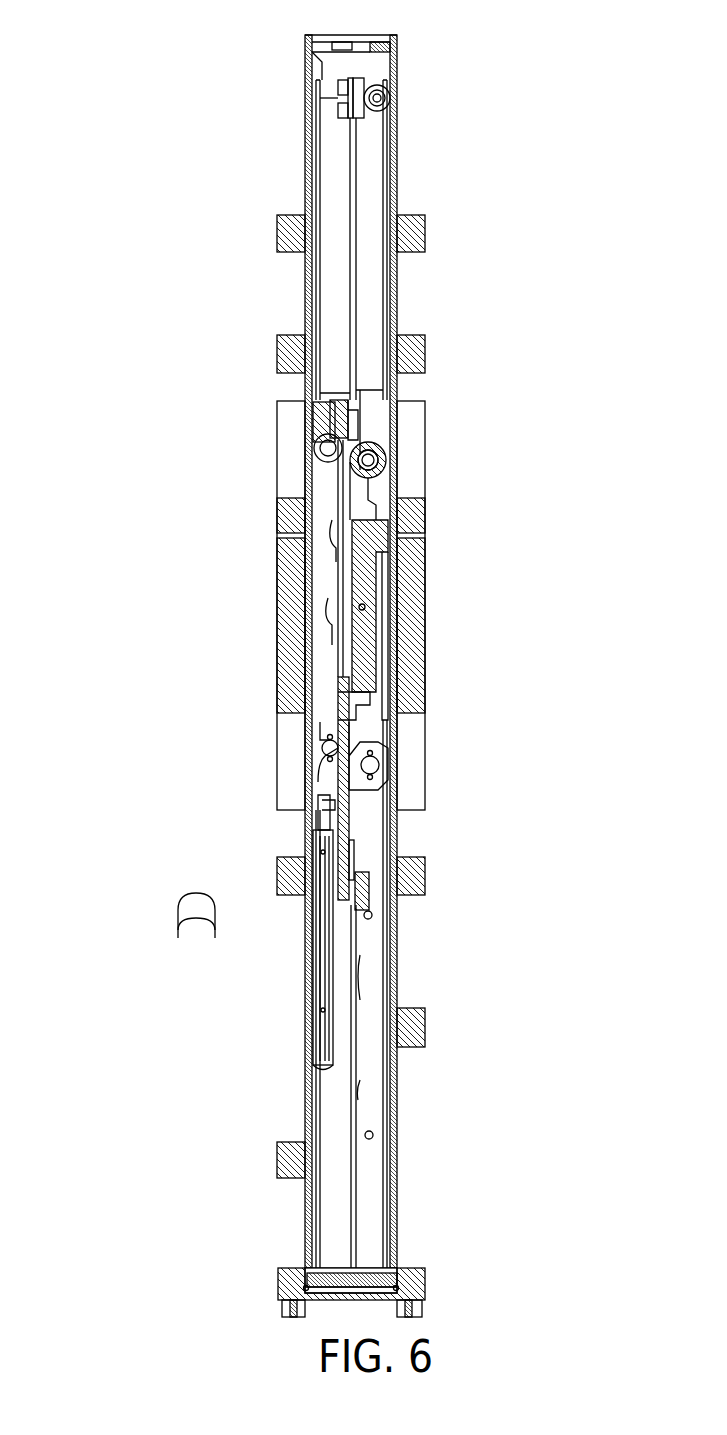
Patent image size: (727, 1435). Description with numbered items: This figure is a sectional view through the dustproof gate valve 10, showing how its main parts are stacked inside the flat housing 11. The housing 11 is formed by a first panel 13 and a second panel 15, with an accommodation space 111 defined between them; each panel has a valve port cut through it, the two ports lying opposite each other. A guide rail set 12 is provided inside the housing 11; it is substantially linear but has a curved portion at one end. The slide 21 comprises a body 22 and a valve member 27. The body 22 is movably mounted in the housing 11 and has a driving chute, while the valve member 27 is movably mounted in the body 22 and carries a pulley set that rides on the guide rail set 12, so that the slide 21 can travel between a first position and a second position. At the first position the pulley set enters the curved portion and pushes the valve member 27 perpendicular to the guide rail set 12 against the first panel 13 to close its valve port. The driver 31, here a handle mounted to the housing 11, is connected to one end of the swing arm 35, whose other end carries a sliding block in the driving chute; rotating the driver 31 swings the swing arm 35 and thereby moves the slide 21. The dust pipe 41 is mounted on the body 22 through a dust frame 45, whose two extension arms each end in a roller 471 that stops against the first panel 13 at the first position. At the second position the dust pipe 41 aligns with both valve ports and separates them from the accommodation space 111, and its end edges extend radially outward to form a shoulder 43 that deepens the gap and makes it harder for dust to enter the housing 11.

The dustproof gate valve 10 is at (575, 135).
The housing 11 is at (405, 55).
The accommodation space 111 is at (353, 1062).
The guide rail set 12 is at (357, 827).
The first panel 13 is at (398, 195).
The second panel 15 is at (305, 290).
The slide 21 is at (308, 638).
The body 22 is at (313, 583).
The valve member 27 is at (380, 594).
The driver 31 is at (175, 1030).
The swing arm 35 is at (332, 955).
The dust pipe 41 is at (372, 184).
The shoulder 43 is at (318, 100).
The dust frame 45 is at (352, 263).
The roller 471 is at (373, 113).